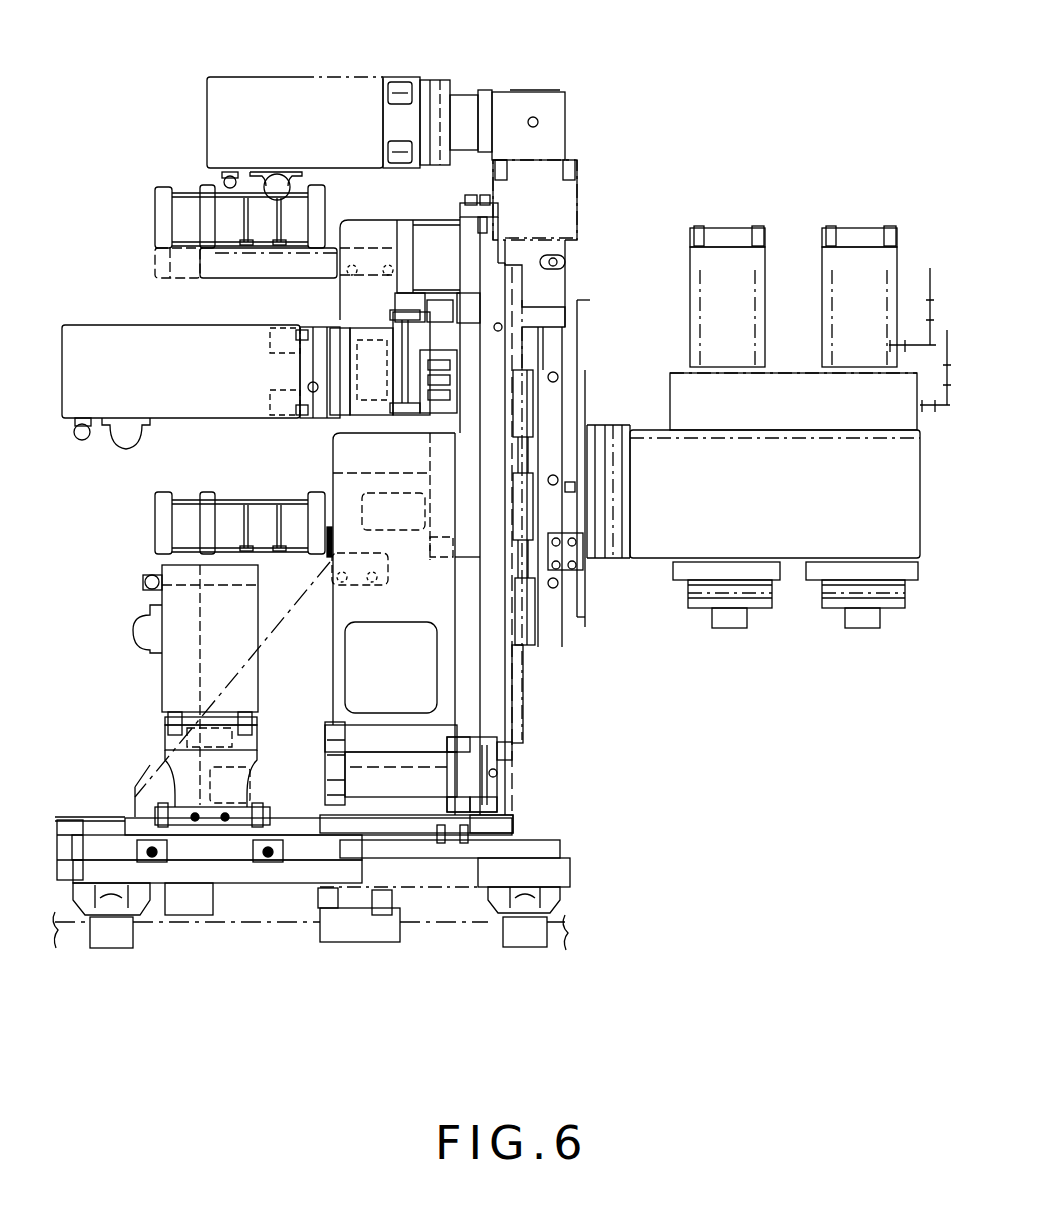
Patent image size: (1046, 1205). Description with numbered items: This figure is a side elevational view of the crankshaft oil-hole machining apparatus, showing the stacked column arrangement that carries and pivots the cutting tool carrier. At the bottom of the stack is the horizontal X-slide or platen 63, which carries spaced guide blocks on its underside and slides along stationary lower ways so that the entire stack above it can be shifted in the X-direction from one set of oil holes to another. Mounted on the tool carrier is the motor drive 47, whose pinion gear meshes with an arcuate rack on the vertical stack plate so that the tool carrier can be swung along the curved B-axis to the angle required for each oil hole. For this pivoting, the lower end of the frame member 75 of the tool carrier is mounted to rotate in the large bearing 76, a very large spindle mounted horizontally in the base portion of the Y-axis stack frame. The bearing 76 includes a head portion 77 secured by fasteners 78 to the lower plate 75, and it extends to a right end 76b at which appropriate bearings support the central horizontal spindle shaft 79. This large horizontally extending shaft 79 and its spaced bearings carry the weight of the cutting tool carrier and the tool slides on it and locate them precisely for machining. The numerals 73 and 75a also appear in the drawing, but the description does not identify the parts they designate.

The motor drive 47 is at (127, 325).
The X-slide or platen 63 is at (112, 905).
The cylinder 73 is at (162, 792).
The frame member 75 is at (540, 660).
The slide plate end 75a is at (505, 750).
The large bearing 76 is at (405, 748).
The right end 76b is at (322, 778).
The head portion 77 is at (500, 758).
The fasteners 78 is at (500, 802).
The central horizontal spindle shaft 79 is at (360, 736).